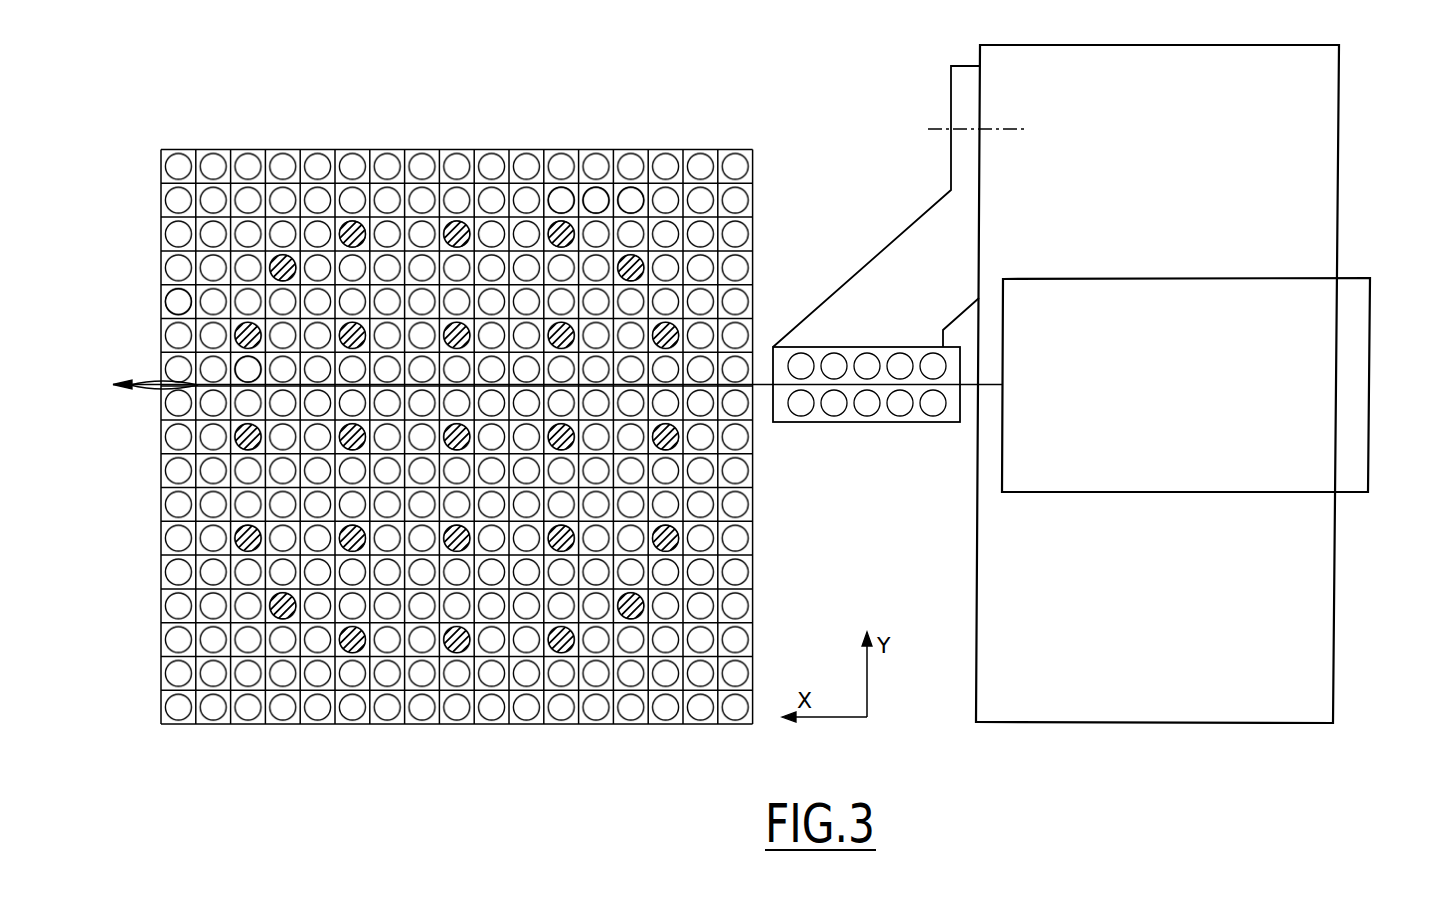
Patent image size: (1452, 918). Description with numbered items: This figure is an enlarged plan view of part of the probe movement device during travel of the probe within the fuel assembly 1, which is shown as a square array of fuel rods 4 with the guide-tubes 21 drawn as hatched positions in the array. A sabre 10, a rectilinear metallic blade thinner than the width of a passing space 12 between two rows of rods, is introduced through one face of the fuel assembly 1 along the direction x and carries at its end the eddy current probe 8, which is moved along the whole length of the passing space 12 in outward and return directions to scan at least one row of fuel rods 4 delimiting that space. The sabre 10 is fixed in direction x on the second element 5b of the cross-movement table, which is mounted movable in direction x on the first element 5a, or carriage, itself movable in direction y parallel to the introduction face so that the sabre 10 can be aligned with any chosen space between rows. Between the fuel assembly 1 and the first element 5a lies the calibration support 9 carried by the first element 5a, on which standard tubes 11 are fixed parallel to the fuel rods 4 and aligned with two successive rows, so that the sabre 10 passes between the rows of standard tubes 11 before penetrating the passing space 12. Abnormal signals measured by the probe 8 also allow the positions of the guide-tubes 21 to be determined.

The fuel assembly 1 is at (437, 120).
The fuel rods 4 is at (632, 200).
The first element 5a is at (1330, 183).
The second element 5b is at (1355, 387).
The eddy current probe 8 is at (131, 399).
The calibration support 9 is at (910, 432).
The sabre 10 is at (245, 380).
The standard tubes 11 is at (801, 416).
The passing space 12 is at (180, 308).
The guide-tubes 21 is at (457, 652).